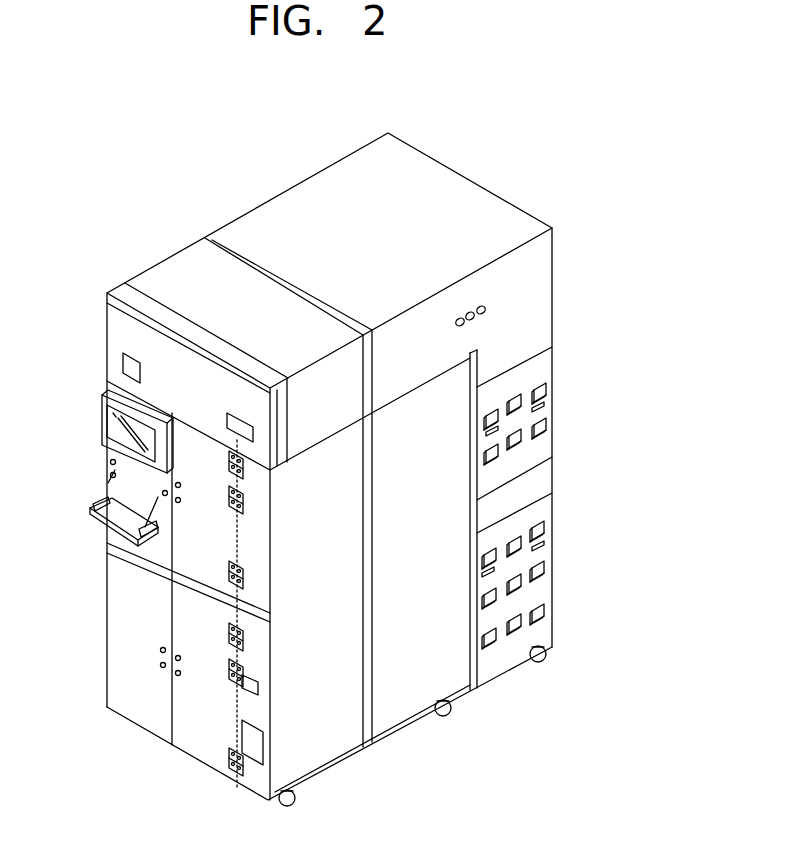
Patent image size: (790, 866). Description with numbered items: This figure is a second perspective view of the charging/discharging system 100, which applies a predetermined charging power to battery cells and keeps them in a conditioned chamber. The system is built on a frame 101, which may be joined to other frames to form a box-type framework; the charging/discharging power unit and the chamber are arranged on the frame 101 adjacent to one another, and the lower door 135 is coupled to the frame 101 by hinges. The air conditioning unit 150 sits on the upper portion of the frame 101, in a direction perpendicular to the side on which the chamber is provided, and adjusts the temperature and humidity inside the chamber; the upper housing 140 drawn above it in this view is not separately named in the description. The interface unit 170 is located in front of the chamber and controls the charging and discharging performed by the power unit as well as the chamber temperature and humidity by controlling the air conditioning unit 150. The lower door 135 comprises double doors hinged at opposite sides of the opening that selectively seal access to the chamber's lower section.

The charging/discharging system 100 is at (582, 150).
The frame 101 is at (372, 740).
The lower door 135 is at (123, 656).
The upper housing unit 140 is at (305, 198).
The air conditioning unit 150 is at (180, 270).
The interface unit 170 is at (105, 522).